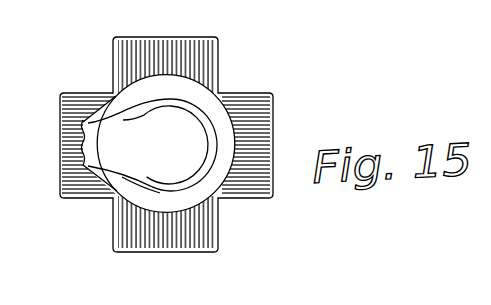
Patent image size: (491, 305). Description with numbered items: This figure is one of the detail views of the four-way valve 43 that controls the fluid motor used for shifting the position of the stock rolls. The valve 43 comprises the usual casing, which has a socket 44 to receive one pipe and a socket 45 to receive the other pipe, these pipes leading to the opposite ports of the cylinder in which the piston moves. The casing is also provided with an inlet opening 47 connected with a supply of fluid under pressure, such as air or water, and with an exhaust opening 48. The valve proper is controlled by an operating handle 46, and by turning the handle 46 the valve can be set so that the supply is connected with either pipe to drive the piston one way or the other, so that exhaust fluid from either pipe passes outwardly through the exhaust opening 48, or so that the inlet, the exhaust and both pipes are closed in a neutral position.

The four-way valve 43 is at (247, 83).
The socket 44 is at (62, 104).
The socket 45 is at (303, 121).
The operating handle 46 is at (150, 144).
The inlet opening 47 is at (173, 255).
The exhaust opening 48 is at (180, 30).